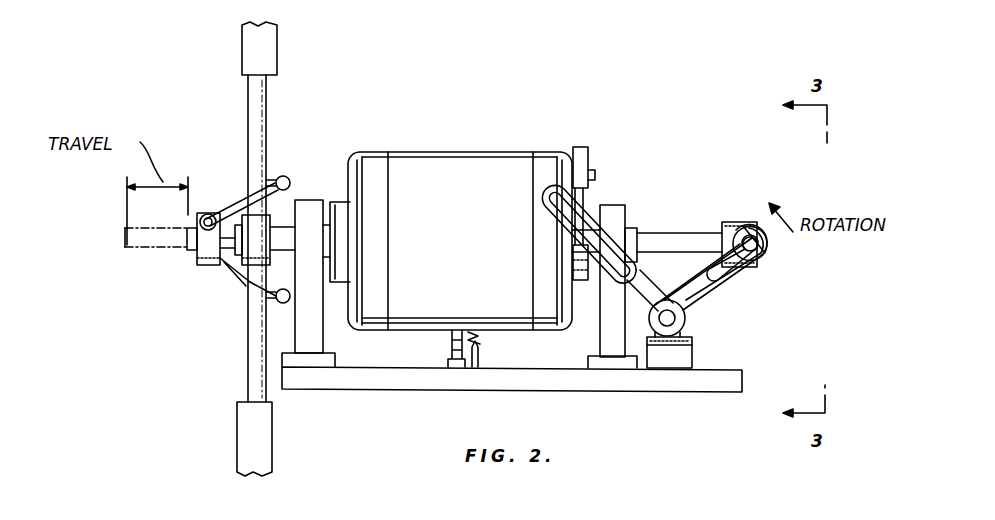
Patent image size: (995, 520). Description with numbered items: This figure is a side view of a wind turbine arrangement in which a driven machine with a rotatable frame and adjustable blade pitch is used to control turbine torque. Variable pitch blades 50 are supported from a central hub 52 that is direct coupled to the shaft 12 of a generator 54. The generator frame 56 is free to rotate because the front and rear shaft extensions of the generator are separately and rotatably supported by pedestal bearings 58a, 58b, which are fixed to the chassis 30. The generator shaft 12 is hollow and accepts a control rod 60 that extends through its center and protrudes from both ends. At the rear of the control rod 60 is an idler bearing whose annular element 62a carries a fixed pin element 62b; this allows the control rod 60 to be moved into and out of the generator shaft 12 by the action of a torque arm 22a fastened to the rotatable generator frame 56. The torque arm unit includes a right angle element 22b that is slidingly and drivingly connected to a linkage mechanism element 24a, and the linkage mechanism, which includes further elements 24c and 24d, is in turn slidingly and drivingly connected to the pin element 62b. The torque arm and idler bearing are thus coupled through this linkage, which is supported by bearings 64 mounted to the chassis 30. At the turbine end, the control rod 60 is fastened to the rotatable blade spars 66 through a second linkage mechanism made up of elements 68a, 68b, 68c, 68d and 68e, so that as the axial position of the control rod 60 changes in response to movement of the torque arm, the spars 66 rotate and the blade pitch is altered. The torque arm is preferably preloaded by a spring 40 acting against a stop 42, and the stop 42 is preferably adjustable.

The chassis 30 is at (388, 373).
The pedestal bearing 58a is at (315, 337).
The pedestal bearing 58b is at (598, 344).
The generator shaft 12 is at (296, 212).
The generator 54 is at (463, 116).
The generator frame 56 is at (470, 152).
The stop 42 is at (451, 345).
The spring 40 is at (480, 345).
The blade spars 66 is at (270, 96).
The variable pitch blades 50 is at (246, 37).
The control rod 60 is at (187, 250).
The linkage mechanism element 68a is at (205, 262).
The linkage mechanism element 68b is at (233, 178).
The linkage mechanism element 68c is at (240, 212).
The linkage mechanism element 68d is at (290, 180).
The linkage mechanism element 68e is at (270, 170).
The central hub 52 is at (258, 268).
The torque arm 22a is at (588, 165).
The right angle element 22b is at (588, 200).
The linkage mechanism element 24a is at (672, 282).
The linkage mechanism element 24c is at (676, 318).
The linkage mechanism element 24d is at (748, 292).
The annular element 62a is at (740, 222).
The pin element 62b is at (766, 248).
The bearings 64 is at (692, 354).